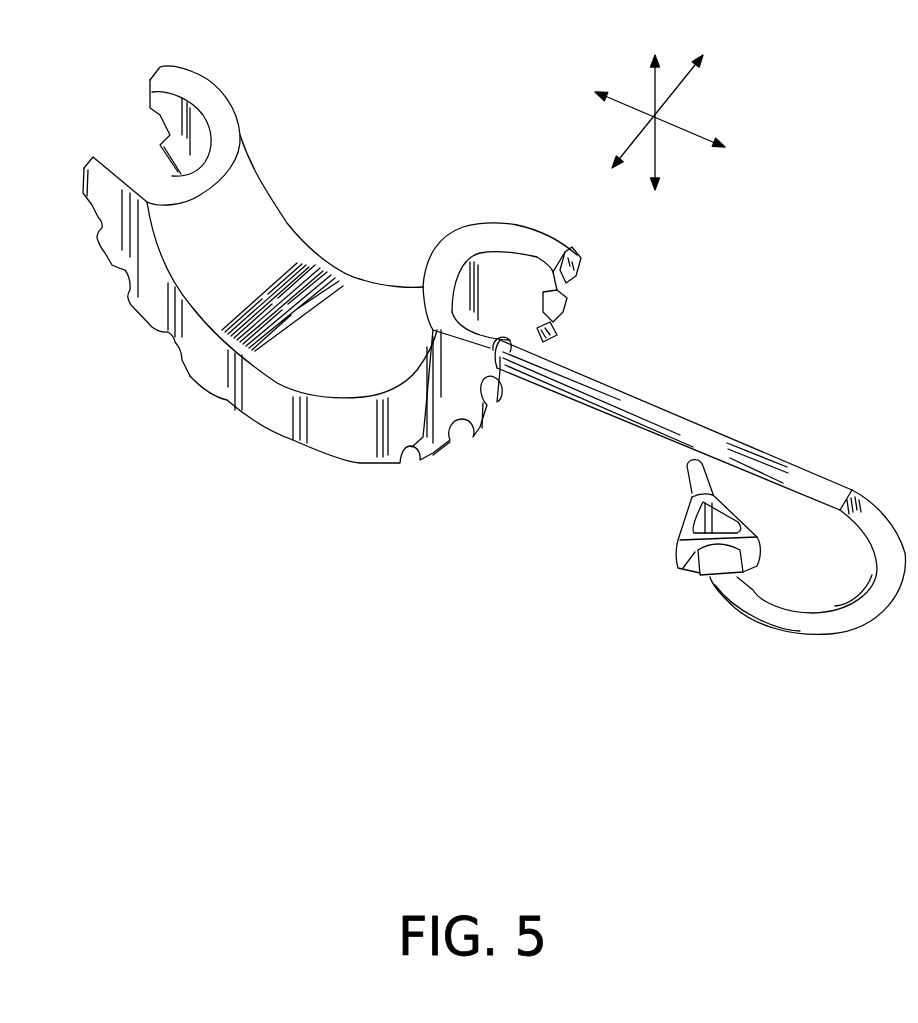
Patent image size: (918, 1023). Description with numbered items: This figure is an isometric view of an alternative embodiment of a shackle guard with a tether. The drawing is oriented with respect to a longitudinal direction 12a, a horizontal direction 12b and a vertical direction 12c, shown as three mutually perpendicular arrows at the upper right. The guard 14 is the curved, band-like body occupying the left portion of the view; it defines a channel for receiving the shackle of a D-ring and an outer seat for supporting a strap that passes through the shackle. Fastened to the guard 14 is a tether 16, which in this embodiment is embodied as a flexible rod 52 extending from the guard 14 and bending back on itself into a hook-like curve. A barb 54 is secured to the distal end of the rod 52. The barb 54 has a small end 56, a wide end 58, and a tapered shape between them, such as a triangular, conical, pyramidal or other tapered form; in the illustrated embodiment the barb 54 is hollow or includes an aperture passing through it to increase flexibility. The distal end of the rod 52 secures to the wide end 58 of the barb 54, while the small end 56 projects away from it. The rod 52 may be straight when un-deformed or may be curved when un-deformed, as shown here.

The longitudinal direction 12a is at (680, 125).
The horizontal direction 12b is at (678, 90).
The vertical direction 12c is at (650, 77).
The guard 14 is at (352, 236).
The tether 16 is at (699, 473).
The flexible rod 52 is at (646, 406).
The barb 54 is at (683, 526).
The small end 56 is at (688, 463).
The wide end 58 is at (688, 564).